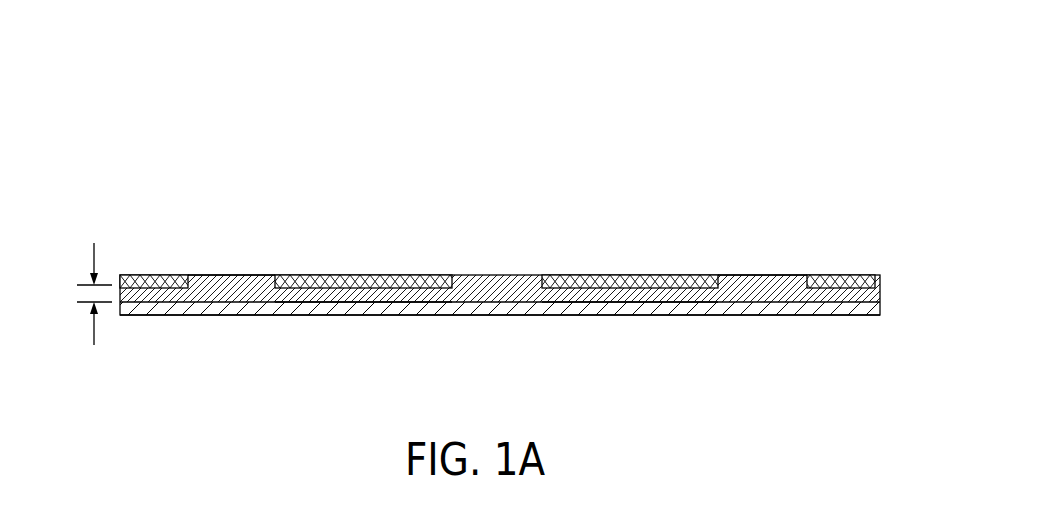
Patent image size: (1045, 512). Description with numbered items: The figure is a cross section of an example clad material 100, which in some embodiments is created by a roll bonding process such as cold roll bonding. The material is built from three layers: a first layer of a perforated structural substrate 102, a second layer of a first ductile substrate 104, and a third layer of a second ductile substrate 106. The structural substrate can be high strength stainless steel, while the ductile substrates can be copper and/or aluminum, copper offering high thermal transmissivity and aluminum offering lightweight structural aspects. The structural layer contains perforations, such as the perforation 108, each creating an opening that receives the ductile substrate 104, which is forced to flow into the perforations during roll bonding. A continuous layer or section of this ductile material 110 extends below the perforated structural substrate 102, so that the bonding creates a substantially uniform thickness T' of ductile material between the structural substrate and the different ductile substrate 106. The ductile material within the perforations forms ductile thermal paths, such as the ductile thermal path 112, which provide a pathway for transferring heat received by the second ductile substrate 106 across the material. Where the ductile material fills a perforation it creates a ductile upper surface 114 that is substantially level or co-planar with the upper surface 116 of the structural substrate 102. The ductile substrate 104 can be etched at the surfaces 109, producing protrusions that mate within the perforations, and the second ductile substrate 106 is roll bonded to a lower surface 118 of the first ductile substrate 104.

The clad material 100 is at (805, 104).
The perforated structural substrate 102 is at (850, 280).
The first ductile substrate 104 is at (777, 283).
The second ductile substrate 106 is at (878, 295).
The perforation 108 is at (293, 265).
The surfaces 109 is at (452, 285).
The continuous layer of ductile material 110 is at (637, 290).
The ductile thermal path 112 is at (238, 285).
The ductile upper surface 114 is at (201, 283).
The upper surface of the perforated structural substrate 116 is at (148, 282).
The lower surface of the first ductile substrate 118 is at (656, 300).
The thickness of ductile material T' is at (73, 301).